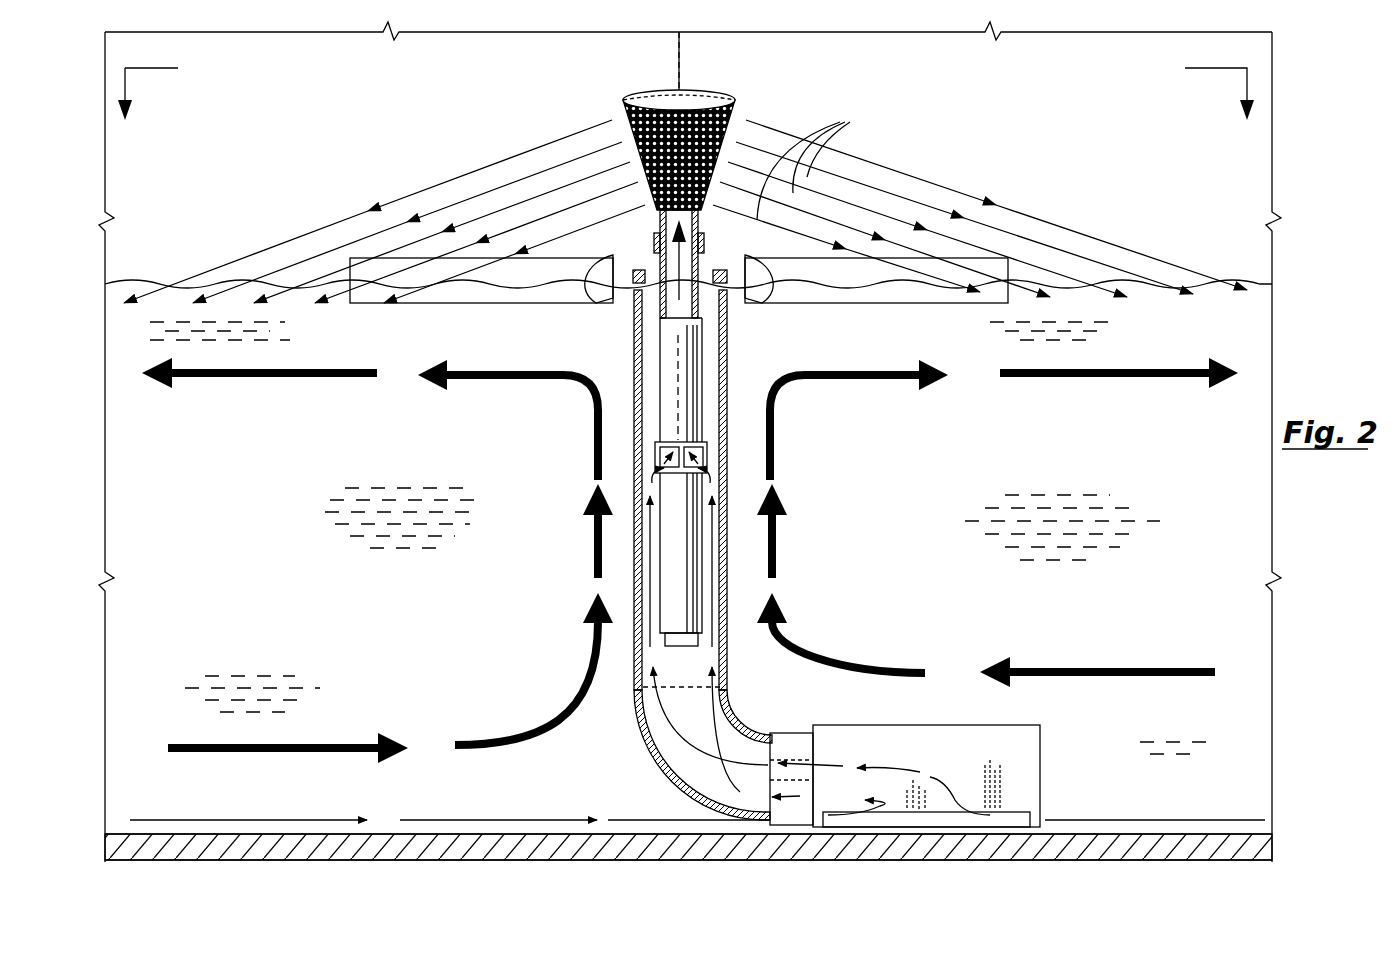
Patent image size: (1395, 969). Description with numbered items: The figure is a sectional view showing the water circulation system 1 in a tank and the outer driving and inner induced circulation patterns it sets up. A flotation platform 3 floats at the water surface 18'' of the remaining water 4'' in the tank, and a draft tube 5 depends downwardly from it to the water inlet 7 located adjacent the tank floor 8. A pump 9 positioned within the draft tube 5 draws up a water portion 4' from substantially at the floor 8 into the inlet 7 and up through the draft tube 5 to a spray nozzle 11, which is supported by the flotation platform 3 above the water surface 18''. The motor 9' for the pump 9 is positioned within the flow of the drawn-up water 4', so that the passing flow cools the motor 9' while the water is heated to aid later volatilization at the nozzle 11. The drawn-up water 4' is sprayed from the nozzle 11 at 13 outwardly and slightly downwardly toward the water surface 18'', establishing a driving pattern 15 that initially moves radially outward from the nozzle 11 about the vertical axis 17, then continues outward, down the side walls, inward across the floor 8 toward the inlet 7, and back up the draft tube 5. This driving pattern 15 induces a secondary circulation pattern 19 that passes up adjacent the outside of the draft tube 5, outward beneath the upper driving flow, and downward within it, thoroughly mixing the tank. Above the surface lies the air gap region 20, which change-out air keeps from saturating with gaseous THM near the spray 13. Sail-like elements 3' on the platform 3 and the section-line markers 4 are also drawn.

The water circulation system 1 is at (968, 108).
The flotation platform 3 is at (685, 204).
The floating sail elements 3' is at (679, 262).
The section line 4 is at (686, 81).
The drawn-up water portion 4' is at (821, 741).
The remaining water 4'' is at (680, 538).
The draft tube 5 is at (728, 355).
The water inlet 7 is at (1007, 808).
The floor 8 is at (384, 836).
The pump 9 is at (681, 380).
The motor 9' is at (681, 544).
The spray nozzle 11 is at (722, 95).
The nozzle spray pattern 13 is at (810, 156).
The driving pattern 15 is at (300, 818).
The vertical axis 17 is at (677, 50).
The water surface 18'' is at (688, 255).
The secondary circulation pattern 19 is at (303, 378).
The air gap region 20 is at (245, 174).